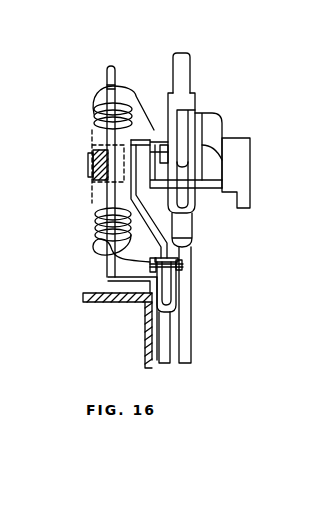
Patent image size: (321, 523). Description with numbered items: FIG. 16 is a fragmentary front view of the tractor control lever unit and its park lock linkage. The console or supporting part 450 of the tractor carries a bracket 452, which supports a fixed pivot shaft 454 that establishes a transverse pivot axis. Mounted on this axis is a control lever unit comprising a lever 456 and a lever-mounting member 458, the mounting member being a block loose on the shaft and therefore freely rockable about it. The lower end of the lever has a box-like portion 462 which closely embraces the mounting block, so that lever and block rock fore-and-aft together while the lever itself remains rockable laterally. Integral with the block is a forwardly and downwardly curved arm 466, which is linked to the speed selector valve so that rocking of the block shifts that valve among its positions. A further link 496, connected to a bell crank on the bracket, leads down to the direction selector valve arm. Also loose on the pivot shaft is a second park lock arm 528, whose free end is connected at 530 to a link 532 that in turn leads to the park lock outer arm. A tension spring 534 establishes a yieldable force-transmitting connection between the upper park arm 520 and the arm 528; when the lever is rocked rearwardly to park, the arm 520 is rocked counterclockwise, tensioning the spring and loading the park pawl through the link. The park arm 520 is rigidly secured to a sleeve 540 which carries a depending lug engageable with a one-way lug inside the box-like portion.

The console or supporting part 450 is at (132, 303).
The bracket 452 is at (247, 145).
The fixed pivot shaft 454 is at (88, 162).
The lever 456 is at (188, 70).
The lever-mounting member 458 is at (222, 118).
The box-like portion 462 is at (190, 95).
The curved arm 466 is at (183, 115).
The link 496 is at (191, 290).
The park arm 520 is at (110, 66).
The second park lock arm 528 is at (130, 193).
The connection 530 is at (150, 264).
The link 532 is at (168, 364).
The tension spring 534 is at (95, 113).
The sleeve 540 is at (150, 140).